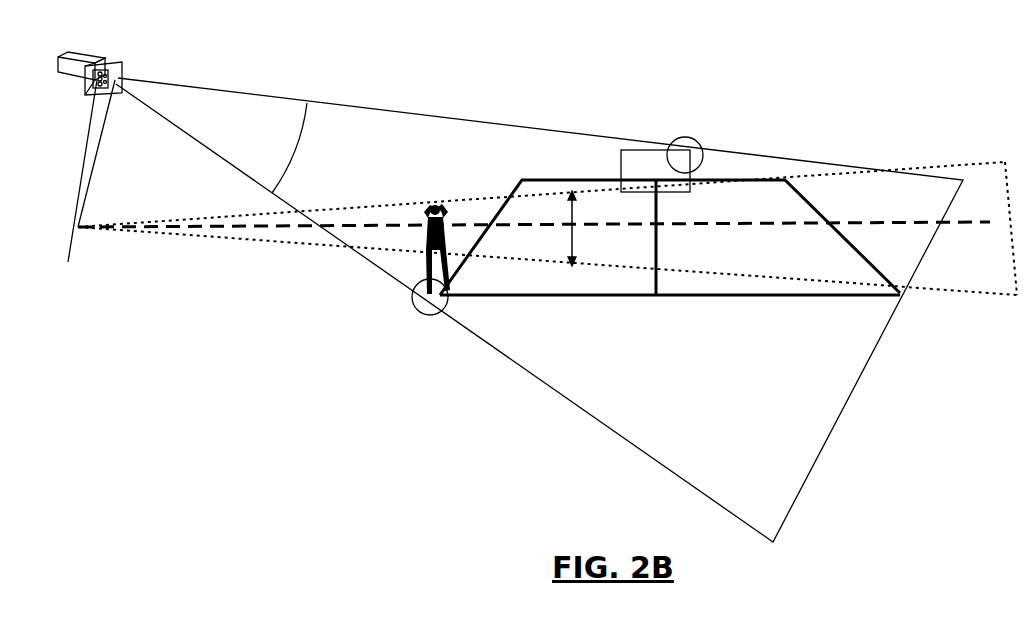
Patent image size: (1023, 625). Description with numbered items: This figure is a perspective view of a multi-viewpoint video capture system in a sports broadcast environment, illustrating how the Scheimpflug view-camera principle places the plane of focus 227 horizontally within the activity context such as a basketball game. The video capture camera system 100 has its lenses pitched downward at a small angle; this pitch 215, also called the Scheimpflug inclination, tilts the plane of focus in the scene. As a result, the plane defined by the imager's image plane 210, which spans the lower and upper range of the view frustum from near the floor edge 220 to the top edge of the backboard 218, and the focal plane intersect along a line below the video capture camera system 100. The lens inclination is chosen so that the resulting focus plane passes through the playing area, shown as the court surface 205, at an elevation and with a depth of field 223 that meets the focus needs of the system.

The video capture camera system 100 is at (92, 60).
The display screen 205 is at (692, 297).
The image plane 210 is at (300, 176).
The pitch 215 is at (82, 231).
The top edge of the backboard 218 is at (690, 138).
The floor edge 220 is at (418, 312).
The depth of field 223 is at (570, 237).
The plane of focus 227 is at (727, 225).